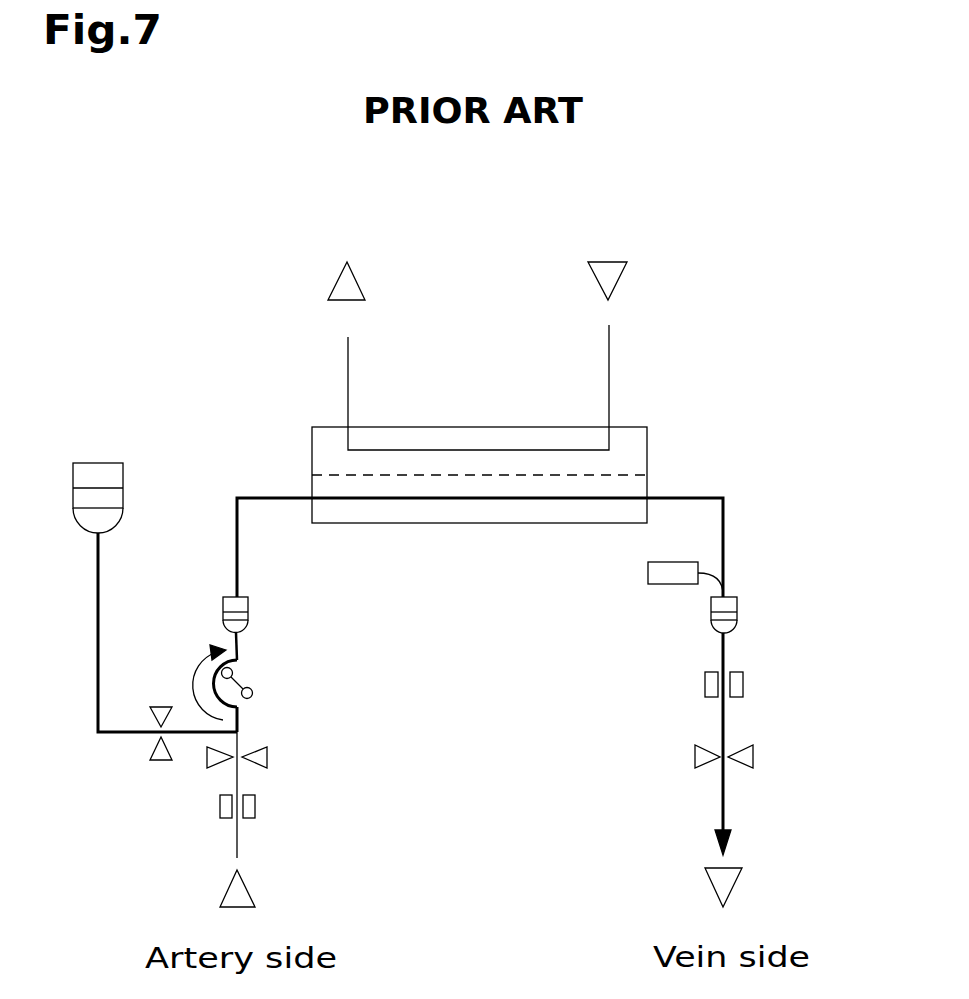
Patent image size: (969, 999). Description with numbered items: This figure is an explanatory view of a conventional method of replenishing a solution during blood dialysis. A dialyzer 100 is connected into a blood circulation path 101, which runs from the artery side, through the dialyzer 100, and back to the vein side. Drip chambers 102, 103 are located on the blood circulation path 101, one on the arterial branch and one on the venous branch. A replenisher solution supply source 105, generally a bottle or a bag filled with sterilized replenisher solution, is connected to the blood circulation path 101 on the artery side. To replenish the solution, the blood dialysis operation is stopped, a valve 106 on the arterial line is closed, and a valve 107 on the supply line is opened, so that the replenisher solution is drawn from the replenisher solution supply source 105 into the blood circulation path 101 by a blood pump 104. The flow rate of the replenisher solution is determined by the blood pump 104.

The dialyzer 100 is at (647, 452).
The blood circulation path 101 is at (237, 550).
The drip chamber 102 is at (250, 617).
The drip chamber 103 is at (737, 618).
The blood pump 104 is at (252, 693).
The replenisher solution supply source 105 is at (127, 498).
The valve 106 is at (268, 758).
The valve 107 is at (162, 763).